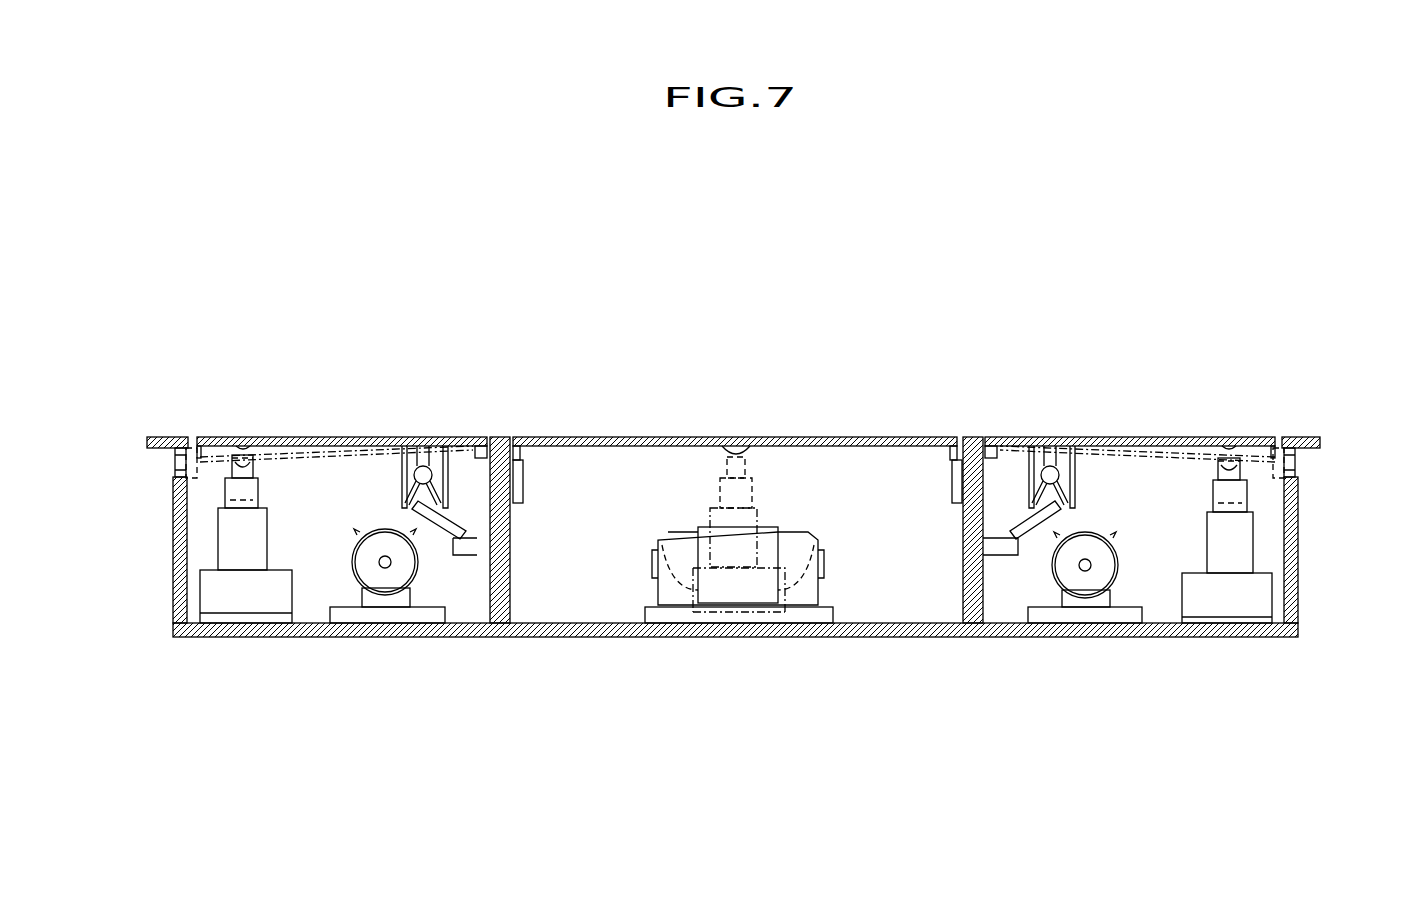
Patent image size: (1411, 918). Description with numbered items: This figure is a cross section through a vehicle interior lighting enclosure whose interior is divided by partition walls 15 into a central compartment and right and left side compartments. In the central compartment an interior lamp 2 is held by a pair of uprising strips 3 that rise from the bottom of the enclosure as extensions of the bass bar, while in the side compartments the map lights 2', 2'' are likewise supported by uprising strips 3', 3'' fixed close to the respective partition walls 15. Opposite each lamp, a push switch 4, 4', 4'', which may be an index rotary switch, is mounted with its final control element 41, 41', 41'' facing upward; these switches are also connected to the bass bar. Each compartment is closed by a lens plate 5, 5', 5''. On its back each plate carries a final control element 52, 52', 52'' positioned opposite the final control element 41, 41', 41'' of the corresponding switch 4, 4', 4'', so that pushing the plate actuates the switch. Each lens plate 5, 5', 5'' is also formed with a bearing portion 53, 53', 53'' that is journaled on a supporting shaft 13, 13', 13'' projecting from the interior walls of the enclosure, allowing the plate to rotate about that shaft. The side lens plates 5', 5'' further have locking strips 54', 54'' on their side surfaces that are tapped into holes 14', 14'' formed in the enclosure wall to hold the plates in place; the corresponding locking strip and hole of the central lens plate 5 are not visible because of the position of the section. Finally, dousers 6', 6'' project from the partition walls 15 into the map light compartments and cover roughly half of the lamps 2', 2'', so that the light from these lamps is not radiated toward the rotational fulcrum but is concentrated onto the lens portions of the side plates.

The lamp 2 is at (752, 539).
The lamp 2' is at (393, 621).
The lamp 2'' is at (1085, 624).
The uprising strip 3 is at (739, 639).
The uprising strip 3' is at (380, 650).
The uprising strip 3'' is at (1076, 672).
The push switch 4 is at (739, 611).
The push switch 4' is at (246, 595).
The push switch 4'' is at (1227, 605).
The lens plate 5 is at (735, 396).
The lens plate 5' is at (342, 386).
The lens plate 5'' is at (1130, 386).
The douser 6' is at (462, 603).
The douser 6'' is at (1008, 614).
The supporting shaft 13 is at (539, 408).
The supporting shaft 13' is at (433, 406).
The supporting shaft 13'' is at (1040, 422).
The hole 14' is at (141, 546).
The hole 14'' is at (1333, 546).
The partition wall 15 is at (510, 593).
The final control element 41 is at (781, 440).
The final control element 41' is at (287, 482).
The final control element 41'' is at (1193, 412).
The final control element 52 is at (745, 396).
The final control element 52' is at (253, 393).
The final control element 52'' is at (1257, 398).
The bearing portion 53 is at (737, 487).
The bearing portion 53' is at (415, 425).
The bearing portion 53'' is at (1008, 426).
The locking strip 54' is at (133, 457).
The locking strip 54'' is at (1339, 457).